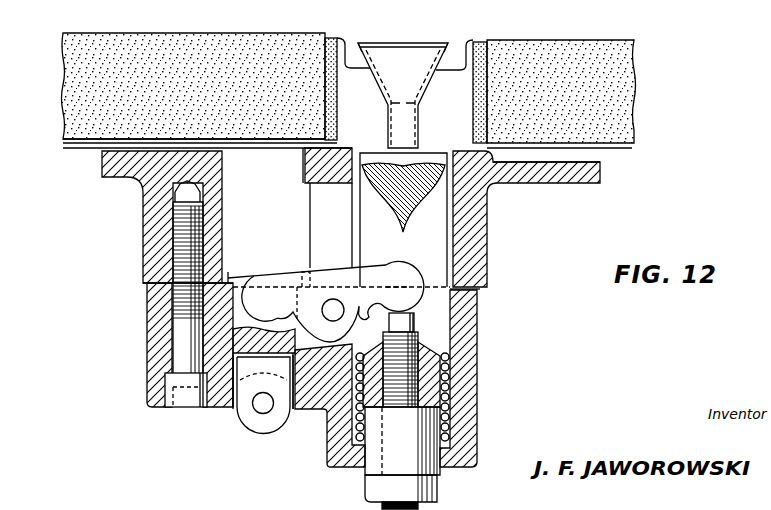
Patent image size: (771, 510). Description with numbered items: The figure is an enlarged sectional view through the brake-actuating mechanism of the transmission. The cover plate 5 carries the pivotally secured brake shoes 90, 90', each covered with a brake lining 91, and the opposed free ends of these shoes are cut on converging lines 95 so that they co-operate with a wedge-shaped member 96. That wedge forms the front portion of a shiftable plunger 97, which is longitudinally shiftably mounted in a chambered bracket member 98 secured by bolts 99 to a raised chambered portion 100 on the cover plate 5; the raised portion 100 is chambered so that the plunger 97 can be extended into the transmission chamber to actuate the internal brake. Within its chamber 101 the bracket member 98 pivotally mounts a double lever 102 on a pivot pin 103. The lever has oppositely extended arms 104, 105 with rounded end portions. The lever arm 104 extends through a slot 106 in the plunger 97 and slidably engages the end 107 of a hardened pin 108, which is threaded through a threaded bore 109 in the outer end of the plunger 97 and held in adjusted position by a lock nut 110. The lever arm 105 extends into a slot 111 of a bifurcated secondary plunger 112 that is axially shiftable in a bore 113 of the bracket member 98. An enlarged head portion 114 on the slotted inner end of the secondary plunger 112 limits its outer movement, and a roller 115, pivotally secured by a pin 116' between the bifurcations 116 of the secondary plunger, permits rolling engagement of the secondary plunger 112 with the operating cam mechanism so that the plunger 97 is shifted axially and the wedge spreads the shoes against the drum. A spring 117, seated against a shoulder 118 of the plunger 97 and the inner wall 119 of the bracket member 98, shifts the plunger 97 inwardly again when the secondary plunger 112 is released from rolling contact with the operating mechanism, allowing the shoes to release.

The cover plate 5 is at (590, 183).
The brake shoe 90 is at (364, 105).
The brake shoe 90' is at (189, 153).
The brake lining 91 is at (193, 48).
The converging lines 95 is at (426, 79).
The wedge-shaped member 96 is at (411, 50).
The plunger 97 is at (435, 175).
The chambered bracket member 98 is at (478, 351).
The bolts 99 is at (185, 355).
The raised chambered portion 100 is at (480, 238).
The chamber 101 is at (416, 318).
The double lever 102 is at (372, 272).
The pivot pin 103 is at (333, 299).
The lever arm 104 is at (415, 277).
The lever arm 105 is at (257, 295).
The slot 106 is at (375, 220).
The end of hardened pin 107 is at (463, 306).
The hardened pin 108 is at (390, 293).
The threaded bore 109 is at (417, 380).
The lock nut 110 is at (438, 492).
The slot 111 is at (238, 290).
The secondary plunger 112 is at (232, 397).
The bore 113 is at (290, 411).
The enlarged head portion 114 is at (272, 272).
The roller 115 is at (249, 426).
The bifurcations 116 is at (270, 413).
The pin 116' is at (252, 439).
The spring 117 is at (441, 410).
The shoulder 118 is at (348, 350).
The inner wall 119 is at (363, 440).